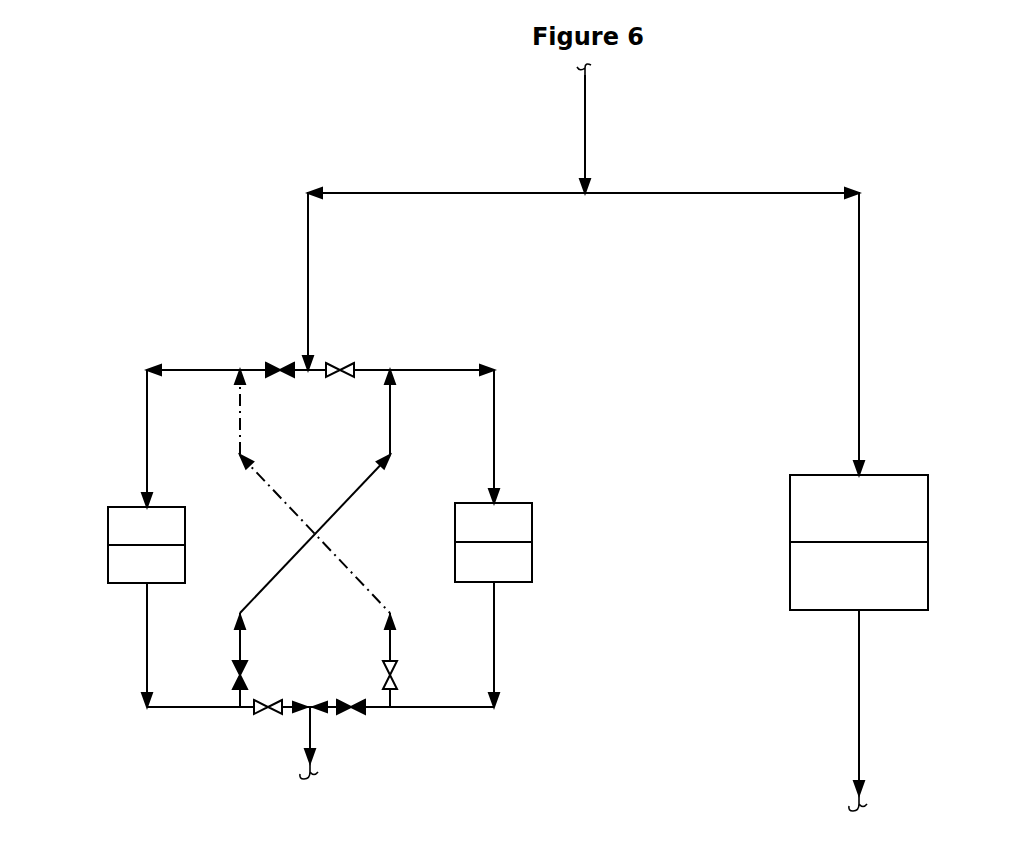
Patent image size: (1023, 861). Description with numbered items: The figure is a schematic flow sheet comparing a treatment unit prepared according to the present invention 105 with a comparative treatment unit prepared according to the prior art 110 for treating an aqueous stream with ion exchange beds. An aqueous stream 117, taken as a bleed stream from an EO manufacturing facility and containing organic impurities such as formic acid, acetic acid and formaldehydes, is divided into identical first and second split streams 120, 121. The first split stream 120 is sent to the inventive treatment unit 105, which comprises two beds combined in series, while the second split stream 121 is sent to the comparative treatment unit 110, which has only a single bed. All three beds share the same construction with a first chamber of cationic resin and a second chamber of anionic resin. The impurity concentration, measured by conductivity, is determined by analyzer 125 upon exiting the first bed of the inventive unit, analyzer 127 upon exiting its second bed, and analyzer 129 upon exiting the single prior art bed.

The treatment unit prepared according to the present invention 105 is at (442, 358).
The comparative treatment unit prepared according to the prior art 110 is at (885, 452).
The aqueous stream 117 is at (610, 128).
The first split stream 120 is at (417, 279).
The second split stream 121 is at (749, 331).
The analyzer 125 is at (147, 647).
The analyzer 127 is at (494, 645).
The analyzer 129 is at (859, 676).